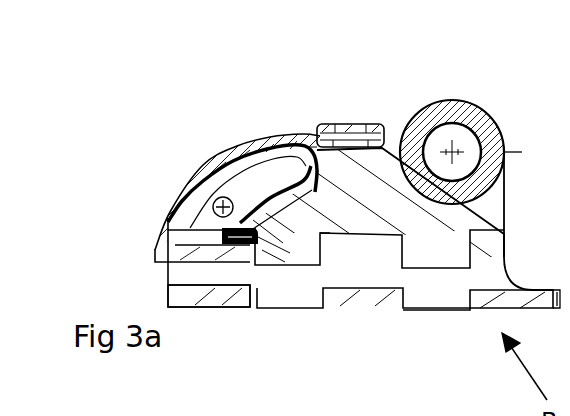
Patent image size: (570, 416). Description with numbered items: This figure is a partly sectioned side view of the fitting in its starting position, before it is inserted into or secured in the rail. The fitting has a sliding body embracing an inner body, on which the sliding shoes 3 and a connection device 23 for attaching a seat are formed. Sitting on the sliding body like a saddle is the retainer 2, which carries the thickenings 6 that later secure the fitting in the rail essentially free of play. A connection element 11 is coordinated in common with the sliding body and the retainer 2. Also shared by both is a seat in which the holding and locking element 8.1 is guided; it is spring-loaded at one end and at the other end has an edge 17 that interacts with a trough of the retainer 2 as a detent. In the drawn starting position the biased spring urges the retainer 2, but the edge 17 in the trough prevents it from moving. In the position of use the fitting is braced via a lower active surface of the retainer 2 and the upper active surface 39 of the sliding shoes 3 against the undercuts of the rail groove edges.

The retainer 2 is at (423, 268).
The sliding shoes 3 is at (378, 298).
The thickenings 6 is at (212, 216).
The holding and locking element 8.1 is at (245, 195).
The connection element 11 is at (356, 124).
The edge 17 is at (302, 174).
The connection device 23 is at (457, 122).
The upper active surface 39 is at (200, 285).